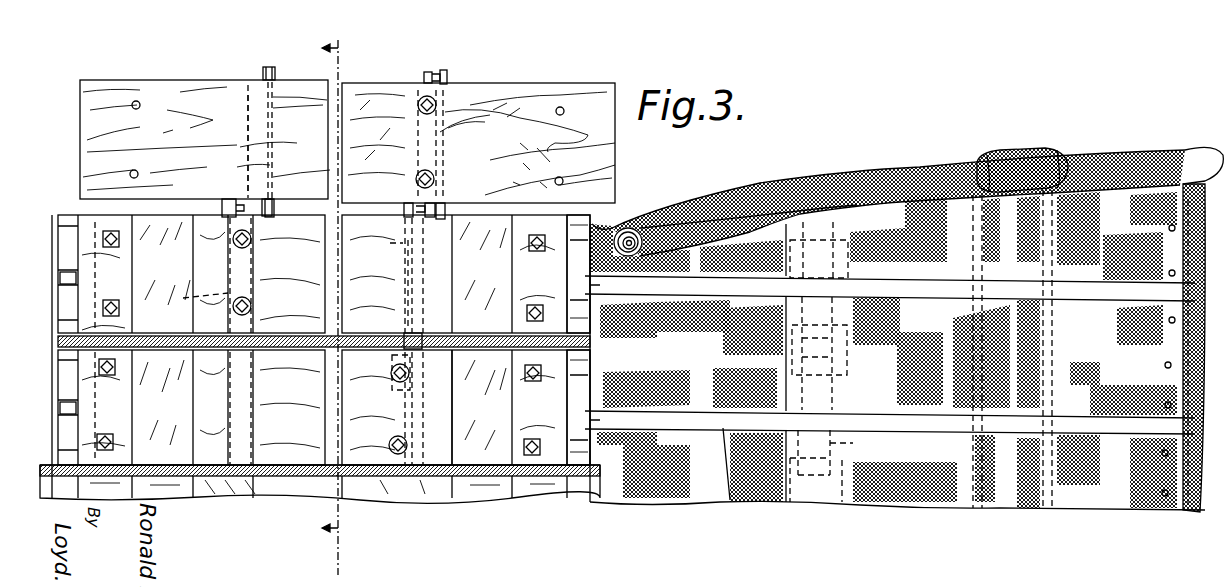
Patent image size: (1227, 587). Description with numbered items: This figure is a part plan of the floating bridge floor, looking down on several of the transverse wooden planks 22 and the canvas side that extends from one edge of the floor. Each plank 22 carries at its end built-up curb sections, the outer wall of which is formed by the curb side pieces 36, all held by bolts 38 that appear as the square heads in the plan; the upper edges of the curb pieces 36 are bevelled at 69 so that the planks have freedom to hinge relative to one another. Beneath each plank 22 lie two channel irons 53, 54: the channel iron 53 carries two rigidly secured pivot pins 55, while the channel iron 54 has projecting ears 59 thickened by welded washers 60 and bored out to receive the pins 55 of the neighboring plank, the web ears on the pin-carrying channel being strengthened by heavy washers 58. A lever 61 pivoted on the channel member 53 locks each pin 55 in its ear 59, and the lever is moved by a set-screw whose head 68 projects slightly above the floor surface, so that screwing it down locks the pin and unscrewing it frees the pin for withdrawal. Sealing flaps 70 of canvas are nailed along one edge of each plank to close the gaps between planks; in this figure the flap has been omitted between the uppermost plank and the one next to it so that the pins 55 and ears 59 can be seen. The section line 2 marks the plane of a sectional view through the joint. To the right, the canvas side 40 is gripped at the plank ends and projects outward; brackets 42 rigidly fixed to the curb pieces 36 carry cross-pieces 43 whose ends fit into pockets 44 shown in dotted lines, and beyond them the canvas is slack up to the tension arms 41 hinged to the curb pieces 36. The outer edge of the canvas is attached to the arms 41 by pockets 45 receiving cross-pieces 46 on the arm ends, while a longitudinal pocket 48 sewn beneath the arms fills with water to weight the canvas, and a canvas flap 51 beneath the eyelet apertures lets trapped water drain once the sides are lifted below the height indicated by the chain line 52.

The section line 2- 2 is at (341, 305).
The plank 22 is at (612, 160).
The curb side piece 36 is at (590, 250).
The bolt 38 is at (117, 304).
The canvas side 40 is at (748, 193).
The tension arm 41 is at (1070, 287).
The bracket 42 is at (730, 500).
The cross-piece 43 is at (860, 447).
The pocket 44 is at (805, 200).
The pocket 45 is at (1183, 218).
The cross-piece 46 is at (1190, 375).
The longitudinal pocket 48 is at (988, 157).
The canvas flap 51 is at (1188, 152).
The chain line 52 is at (417, 437).
The channel iron 53 is at (445, 72).
The channel iron 54 is at (248, 100).
The pivot pin 55 is at (240, 198).
The heavy washer 58 is at (273, 206).
The ear 59 is at (408, 210).
The washer 60 is at (266, 68).
The lever 61 is at (392, 375).
The set-screw head 68 is at (417, 175).
The bevel 69 is at (586, 346).
The sealing flap 70 is at (286, 305).